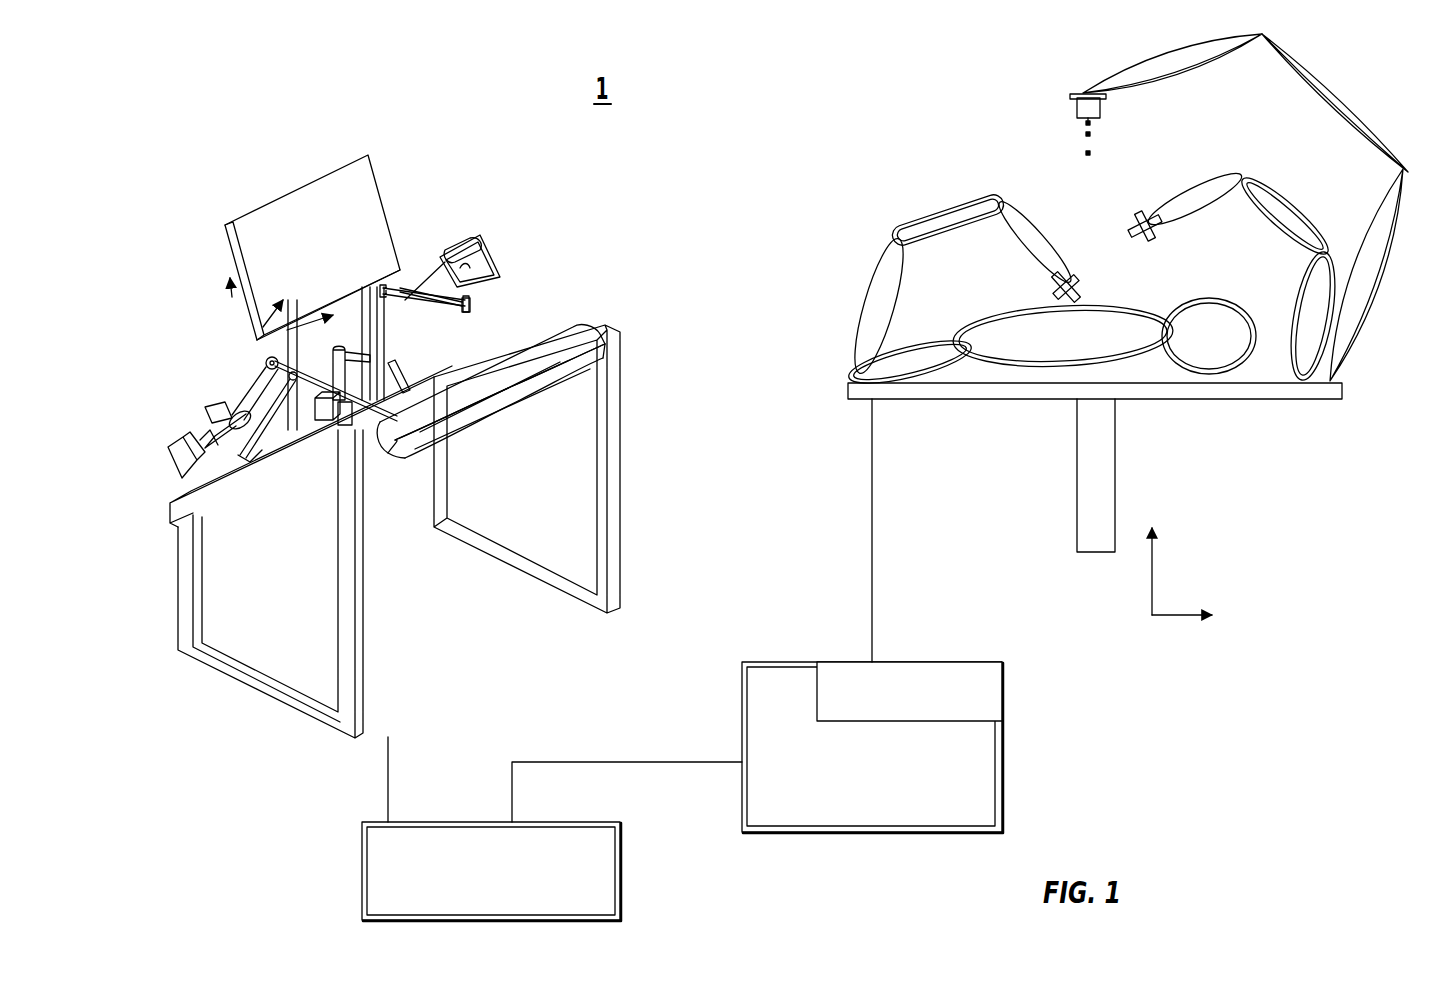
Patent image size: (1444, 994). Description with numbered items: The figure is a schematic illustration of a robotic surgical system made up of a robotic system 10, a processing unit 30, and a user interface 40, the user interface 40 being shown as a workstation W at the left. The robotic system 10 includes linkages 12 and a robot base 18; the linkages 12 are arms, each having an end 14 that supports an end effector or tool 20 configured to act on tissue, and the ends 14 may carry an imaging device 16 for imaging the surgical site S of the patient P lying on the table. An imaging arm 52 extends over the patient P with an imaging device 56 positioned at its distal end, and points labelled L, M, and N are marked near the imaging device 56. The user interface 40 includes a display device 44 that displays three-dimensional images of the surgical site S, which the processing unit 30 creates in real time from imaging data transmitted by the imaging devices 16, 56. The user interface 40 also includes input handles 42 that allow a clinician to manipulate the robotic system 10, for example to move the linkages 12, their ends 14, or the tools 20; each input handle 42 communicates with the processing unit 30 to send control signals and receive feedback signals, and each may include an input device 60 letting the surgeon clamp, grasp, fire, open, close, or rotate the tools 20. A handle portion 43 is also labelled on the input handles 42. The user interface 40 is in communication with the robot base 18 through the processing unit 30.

The robotic system 10 is at (950, 78).
The linkages 12 is at (905, 185).
The end 14 is at (1042, 284).
The imaging device 16 is at (1066, 276).
The robot base 18 is at (856, 776).
The end effector or tool 20 is at (1140, 216).
The processing unit 30 is at (474, 886).
The user interface 40 is at (233, 148).
The input arms or handles 42 is at (403, 377).
The handle 43 is at (458, 262).
The display device 44 is at (387, 177).
The imaging arm 52 is at (1358, 106).
The imaging device 56 is at (1076, 106).
The input device 60 is at (458, 228).
The workstation W is at (497, 185).
The surgical site S is at (1117, 320).
The patient P is at (1132, 350).
The point L is at (1086, 122).
The point M is at (1086, 134).
The point N is at (1086, 153).